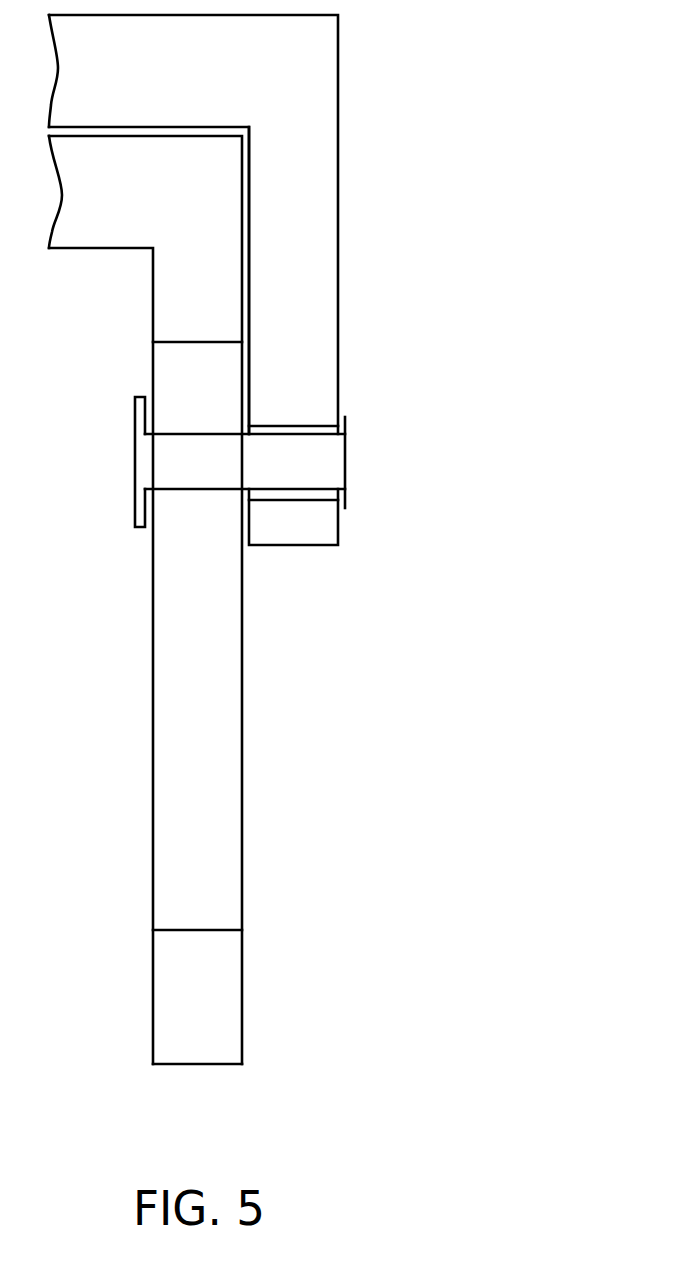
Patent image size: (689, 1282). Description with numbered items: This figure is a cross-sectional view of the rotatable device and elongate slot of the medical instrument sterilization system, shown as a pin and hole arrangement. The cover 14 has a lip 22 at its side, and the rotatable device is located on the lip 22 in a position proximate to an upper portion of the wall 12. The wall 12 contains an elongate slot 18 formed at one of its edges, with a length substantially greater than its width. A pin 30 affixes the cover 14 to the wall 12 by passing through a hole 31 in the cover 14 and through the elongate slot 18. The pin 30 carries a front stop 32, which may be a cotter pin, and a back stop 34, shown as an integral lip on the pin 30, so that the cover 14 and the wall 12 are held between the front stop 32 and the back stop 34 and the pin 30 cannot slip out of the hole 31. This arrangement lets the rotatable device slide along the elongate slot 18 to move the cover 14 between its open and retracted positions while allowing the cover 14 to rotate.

The cover 14 is at (338, 155).
The lip 22 is at (310, 250).
The elongate slot 18 is at (202, 722).
The wall 12 is at (225, 993).
The pin 30 is at (305, 453).
The front stop 32 is at (345, 495).
The back stop 34 is at (135, 477).
The hole 31 is at (305, 495).